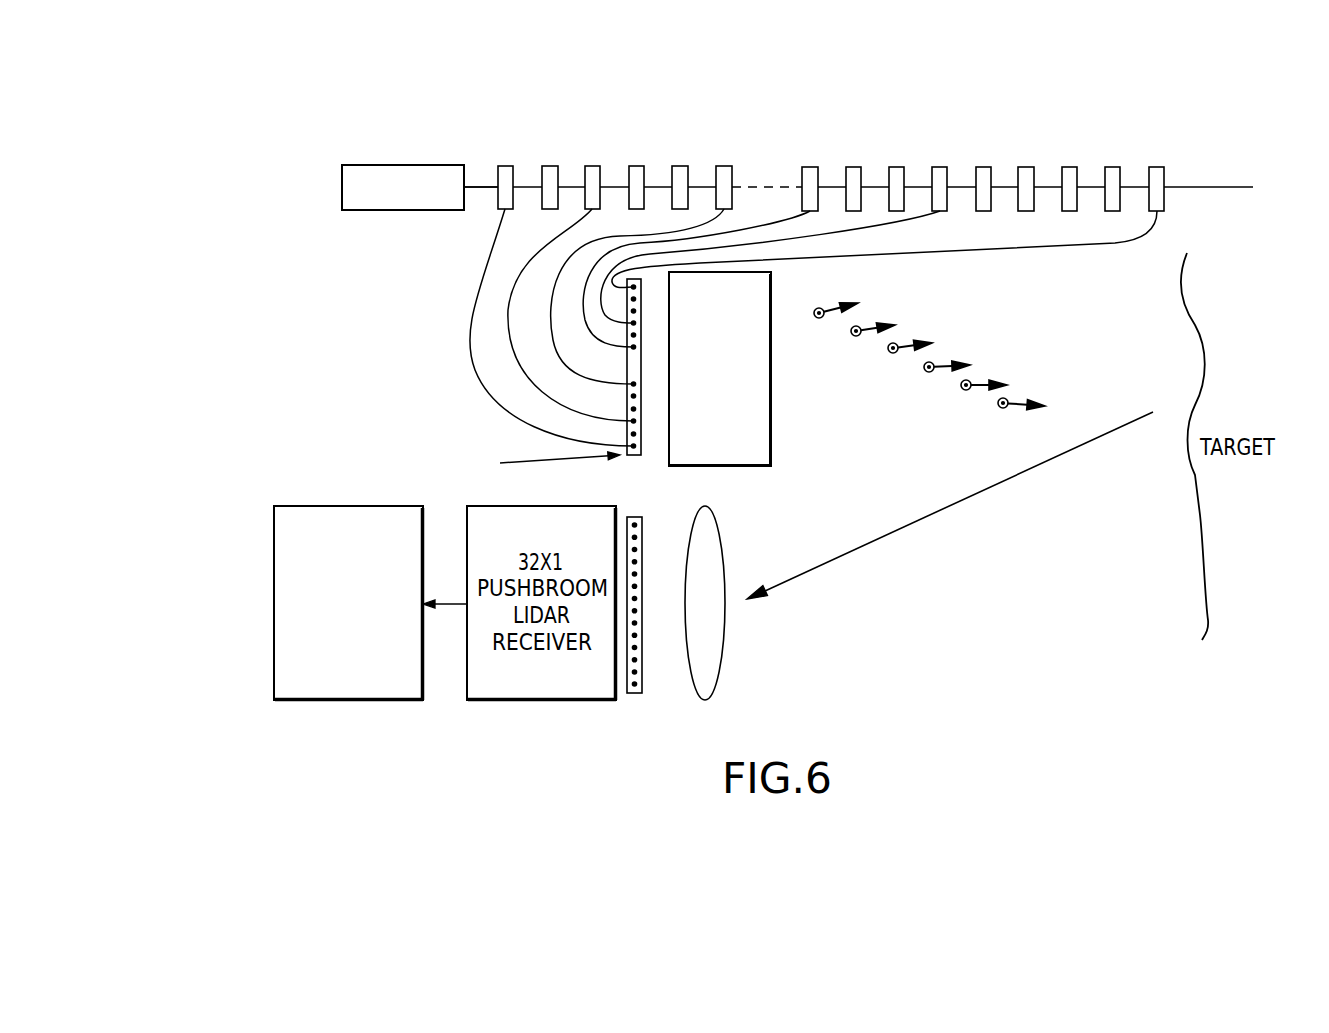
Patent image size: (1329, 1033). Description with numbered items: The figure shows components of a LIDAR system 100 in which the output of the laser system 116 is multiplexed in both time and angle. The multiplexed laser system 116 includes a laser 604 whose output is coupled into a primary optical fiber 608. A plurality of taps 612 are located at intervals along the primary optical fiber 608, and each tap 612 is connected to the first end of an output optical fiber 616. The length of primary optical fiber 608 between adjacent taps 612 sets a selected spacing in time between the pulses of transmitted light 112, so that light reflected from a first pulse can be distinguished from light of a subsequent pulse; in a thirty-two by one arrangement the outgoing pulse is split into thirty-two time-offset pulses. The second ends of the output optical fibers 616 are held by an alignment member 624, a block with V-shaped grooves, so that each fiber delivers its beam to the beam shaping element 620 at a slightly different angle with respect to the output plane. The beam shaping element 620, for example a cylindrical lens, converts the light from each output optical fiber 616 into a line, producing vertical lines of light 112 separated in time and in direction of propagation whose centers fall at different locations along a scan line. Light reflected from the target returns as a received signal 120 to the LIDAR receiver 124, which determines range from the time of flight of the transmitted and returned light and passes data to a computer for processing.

The LIDAR system 100 is at (921, 78).
The transmitted light 112 is at (956, 304).
The laser system 116 is at (288, 176).
The received signal 120 is at (869, 572).
The LIDAR receiver 124 is at (251, 680).
The laser 604 is at (397, 165).
The primary optical fiber 608 is at (477, 188).
The taps 612 is at (515, 175).
The output optical fiber 616 is at (473, 320).
The beam shaping element 620 is at (730, 466).
The alignment member 624 is at (633, 455).